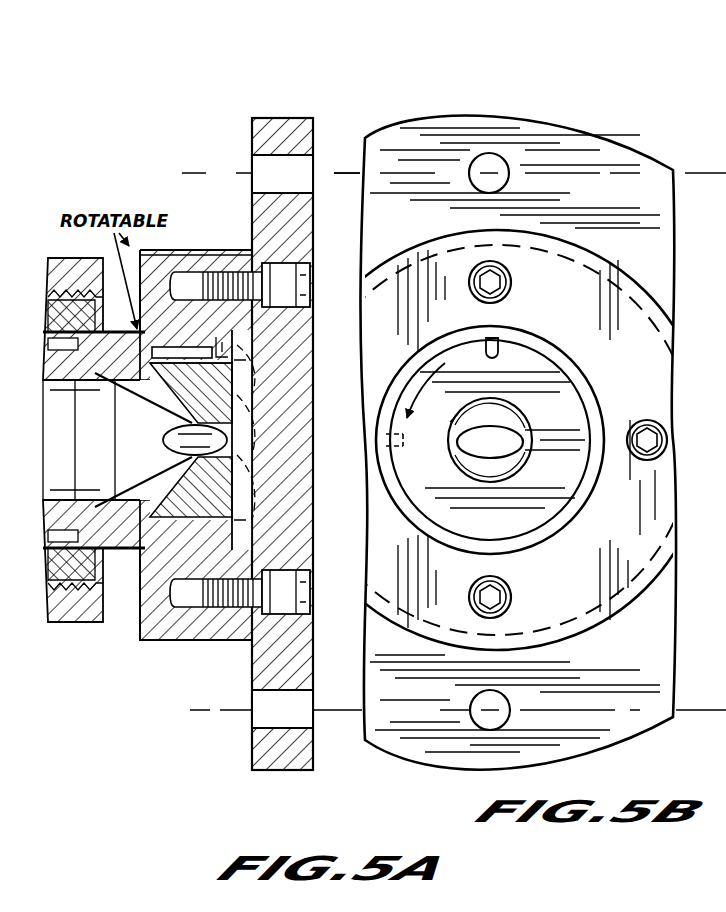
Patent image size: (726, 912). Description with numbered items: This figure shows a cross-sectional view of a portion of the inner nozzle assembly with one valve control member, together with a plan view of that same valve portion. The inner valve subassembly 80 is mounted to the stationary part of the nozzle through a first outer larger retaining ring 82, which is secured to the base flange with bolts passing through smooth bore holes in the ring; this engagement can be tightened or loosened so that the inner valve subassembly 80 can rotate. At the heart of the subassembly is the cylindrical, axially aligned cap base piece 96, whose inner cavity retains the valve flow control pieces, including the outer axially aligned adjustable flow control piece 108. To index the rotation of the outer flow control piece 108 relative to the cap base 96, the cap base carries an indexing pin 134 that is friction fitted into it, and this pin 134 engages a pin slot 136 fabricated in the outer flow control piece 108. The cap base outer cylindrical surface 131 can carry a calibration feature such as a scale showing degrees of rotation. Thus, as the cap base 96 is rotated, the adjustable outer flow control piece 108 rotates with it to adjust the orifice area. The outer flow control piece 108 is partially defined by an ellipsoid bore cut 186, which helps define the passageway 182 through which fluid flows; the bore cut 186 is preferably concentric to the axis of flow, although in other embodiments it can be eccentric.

In FIG. 5A, the outer retaining ring 82 is at (283, 113).
In FIG. 5B, the outer retaining ring 82 is at (502, 112).
In FIG. 5A, the inner valve subassembly 80 is at (170, 640).
In FIG. 5A, the cap base piece 96 is at (137, 623).
In FIG. 5A, the outer flow control piece 108 is at (207, 509).
In FIG. 5B, the outer flow control piece 108 is at (527, 513).
In FIG. 5A, the cap base outer cylindrical surface 131 is at (228, 639).
In FIG. 5A, the indexing pin 134 is at (240, 381).
In FIG. 5B, the indexing pin 134 is at (500, 352).
In FIG. 5A, the pin slot 136 is at (262, 345).
In FIG. 5B, the pin slot 136 is at (404, 447).
In FIG. 5A, the passageway 182 is at (288, 412).
In FIG. 5B, the passageway 182 is at (505, 468).
In FIG. 5B, the ellipsoid bore cut 186 is at (520, 427).